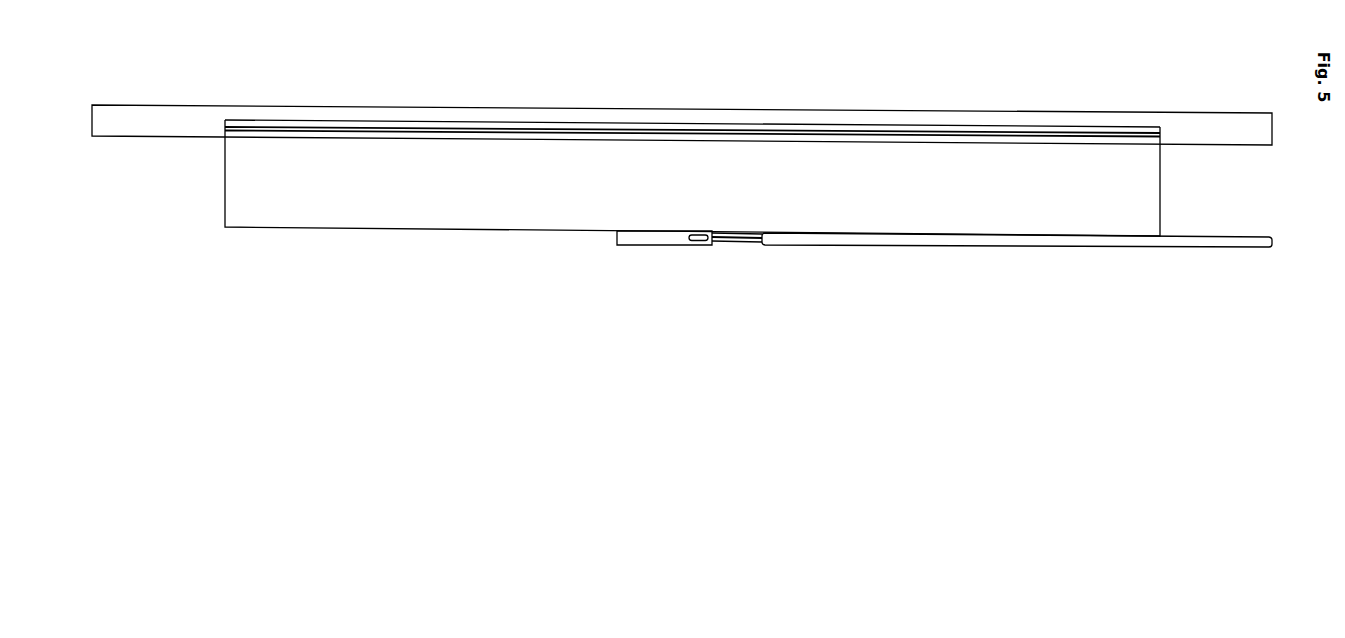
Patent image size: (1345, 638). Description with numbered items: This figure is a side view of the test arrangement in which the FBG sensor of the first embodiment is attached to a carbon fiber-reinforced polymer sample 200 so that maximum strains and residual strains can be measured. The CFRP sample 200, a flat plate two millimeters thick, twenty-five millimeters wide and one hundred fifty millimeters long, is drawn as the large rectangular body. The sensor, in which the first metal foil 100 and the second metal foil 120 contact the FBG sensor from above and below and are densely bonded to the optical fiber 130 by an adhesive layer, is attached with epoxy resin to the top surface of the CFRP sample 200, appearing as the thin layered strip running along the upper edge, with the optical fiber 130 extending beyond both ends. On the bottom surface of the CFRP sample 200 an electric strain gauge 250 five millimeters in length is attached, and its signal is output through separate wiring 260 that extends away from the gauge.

The first metal foil 100 is at (622, 125).
The second metal foil 120 is at (913, 140).
The optical fiber 130 is at (1238, 118).
The CFRP sample 200 is at (430, 223).
The strain gauge 250 is at (660, 237).
The wiring 260 is at (1205, 250).